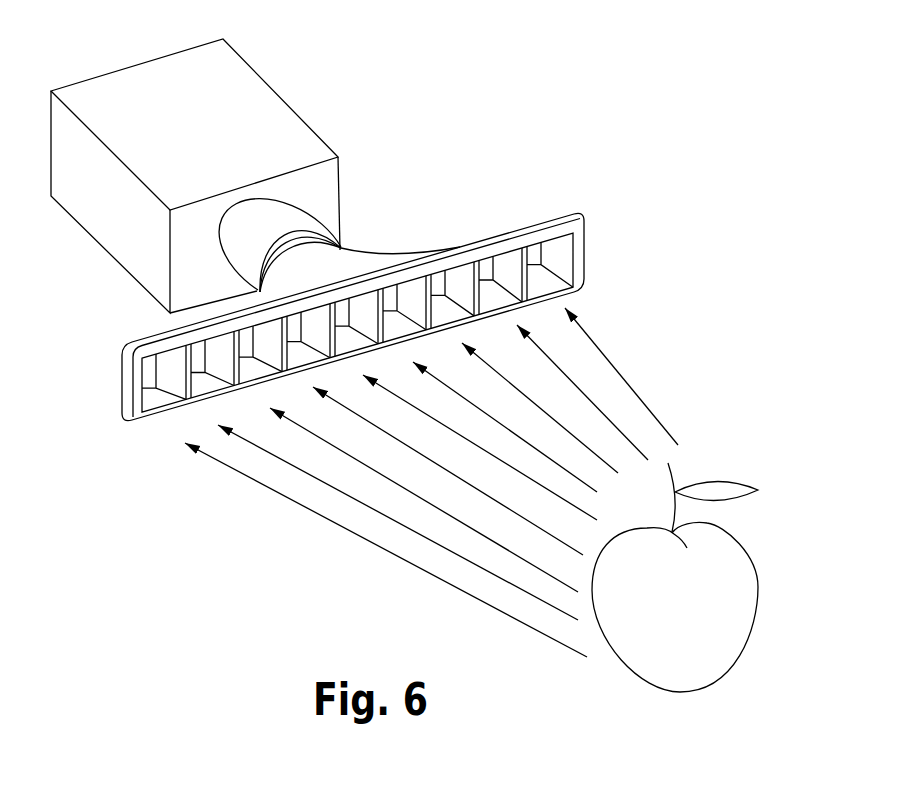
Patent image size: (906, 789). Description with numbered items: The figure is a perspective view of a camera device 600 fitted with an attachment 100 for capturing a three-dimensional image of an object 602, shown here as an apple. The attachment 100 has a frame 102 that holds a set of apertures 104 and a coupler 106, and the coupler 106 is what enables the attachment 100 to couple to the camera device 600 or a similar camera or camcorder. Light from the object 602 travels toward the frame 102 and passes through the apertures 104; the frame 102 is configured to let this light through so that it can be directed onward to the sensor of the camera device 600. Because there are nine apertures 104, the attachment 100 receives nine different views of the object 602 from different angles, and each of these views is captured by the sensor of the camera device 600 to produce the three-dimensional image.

The attachment 100 is at (583, 152).
The frame 102 is at (356, 258).
The apertures 104 is at (565, 257).
The coupler 106 is at (314, 203).
The camera device 600 is at (252, 86).
The object 602 is at (769, 536).